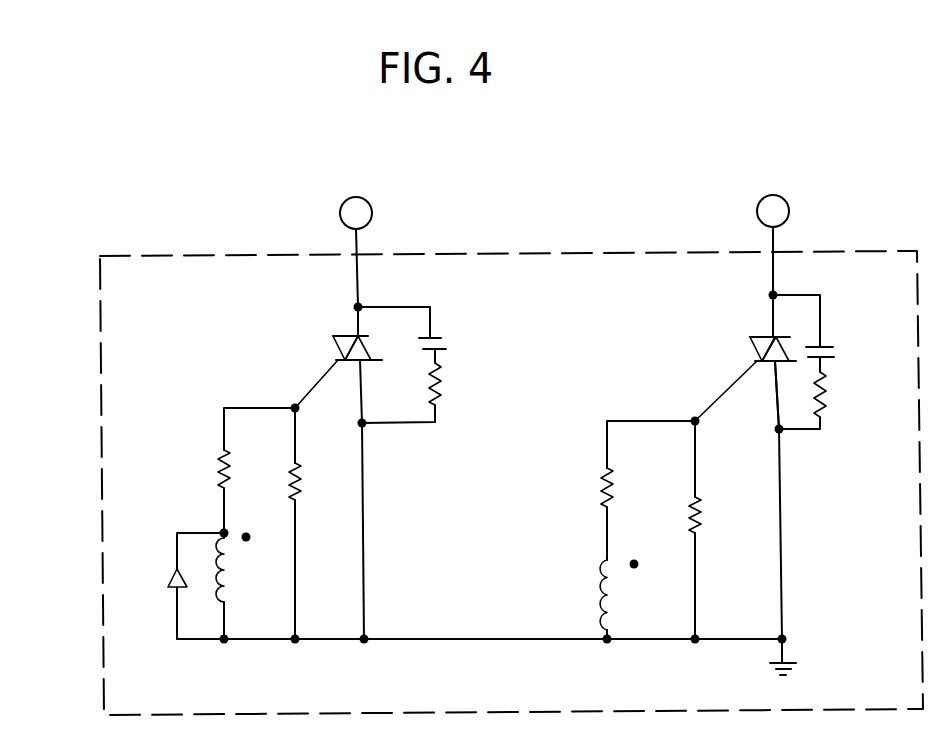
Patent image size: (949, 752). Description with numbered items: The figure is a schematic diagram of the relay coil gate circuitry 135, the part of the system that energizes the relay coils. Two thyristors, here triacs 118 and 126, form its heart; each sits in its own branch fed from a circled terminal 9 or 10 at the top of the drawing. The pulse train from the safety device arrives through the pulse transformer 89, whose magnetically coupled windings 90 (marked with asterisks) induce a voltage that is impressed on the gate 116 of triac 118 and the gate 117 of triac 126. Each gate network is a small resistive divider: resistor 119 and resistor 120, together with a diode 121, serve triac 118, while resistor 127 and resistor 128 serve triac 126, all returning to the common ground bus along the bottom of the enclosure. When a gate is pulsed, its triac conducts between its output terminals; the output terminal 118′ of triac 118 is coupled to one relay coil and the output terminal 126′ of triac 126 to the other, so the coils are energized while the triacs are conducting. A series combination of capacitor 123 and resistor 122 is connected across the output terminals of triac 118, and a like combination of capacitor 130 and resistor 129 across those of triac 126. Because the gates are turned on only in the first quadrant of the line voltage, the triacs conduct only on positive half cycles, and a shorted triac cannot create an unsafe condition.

The relay coil gate circuitry 135 is at (92, 460).
The terminal 9 is at (356, 252).
The terminal 10 is at (773, 245).
The triac 118 is at (337, 340).
The output terminal 118′ is at (357, 320).
The gate 116 is at (308, 394).
The resistor 119 is at (222, 470).
The resistor 120 is at (297, 481).
The diode 121 is at (173, 588).
The resistor 122 is at (441, 378).
The capacitor 123 is at (440, 334).
The pulse transformer 89 is at (233, 598).
The winding 90 is at (226, 566).
The triac 126 is at (756, 345).
The output terminal 126′ is at (772, 316).
The gate 117 is at (724, 393).
The resistor 127 is at (611, 482).
The resistor 128 is at (702, 508).
The resistor 129 is at (827, 390).
The capacitor 130 is at (823, 345).